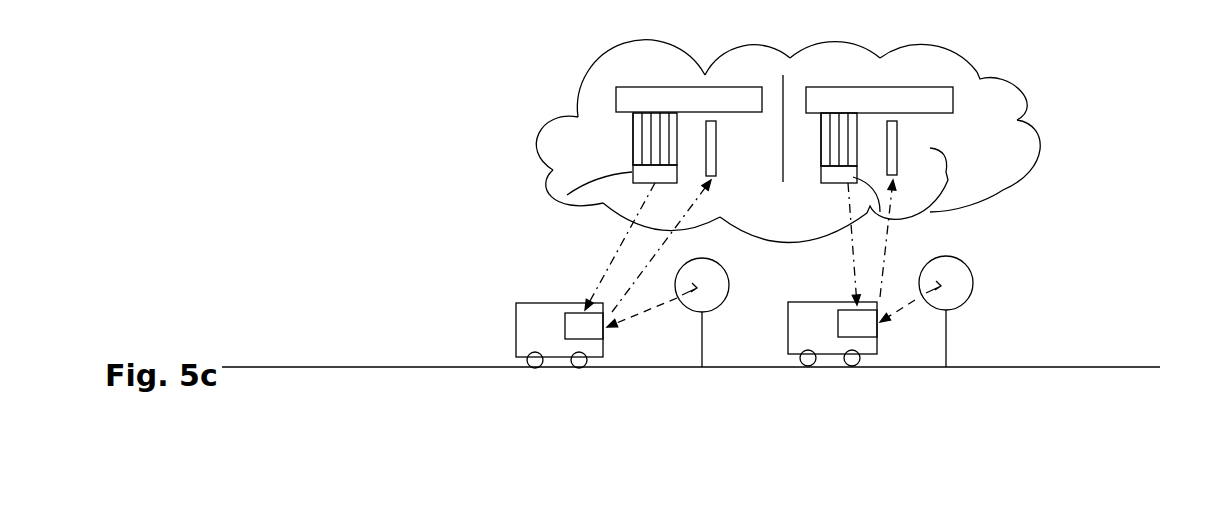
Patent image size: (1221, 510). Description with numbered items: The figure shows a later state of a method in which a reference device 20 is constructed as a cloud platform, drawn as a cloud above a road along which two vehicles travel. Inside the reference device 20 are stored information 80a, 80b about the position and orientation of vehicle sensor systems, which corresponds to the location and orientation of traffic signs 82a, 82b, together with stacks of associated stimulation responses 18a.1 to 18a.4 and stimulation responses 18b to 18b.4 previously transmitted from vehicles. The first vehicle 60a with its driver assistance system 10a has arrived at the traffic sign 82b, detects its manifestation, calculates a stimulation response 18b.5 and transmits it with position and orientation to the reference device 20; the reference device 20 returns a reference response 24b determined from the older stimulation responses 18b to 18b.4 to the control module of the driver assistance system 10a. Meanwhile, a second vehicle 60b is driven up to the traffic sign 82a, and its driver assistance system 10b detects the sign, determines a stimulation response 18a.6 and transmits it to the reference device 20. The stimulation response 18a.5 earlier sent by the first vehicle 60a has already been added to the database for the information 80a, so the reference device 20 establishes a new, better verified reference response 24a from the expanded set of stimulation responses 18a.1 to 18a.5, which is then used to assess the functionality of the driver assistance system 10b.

The reference device 20 is at (458, 112).
The information 80a is at (650, 103).
The information 80b is at (933, 100).
The stimulation response 18a.1 is at (637, 137).
The stimulation response 18a.4 is at (650, 125).
The stimulation response 18a.5 is at (668, 125).
The stimulation response 18a.6 is at (717, 168).
The stimulation response 18b is at (824, 125).
The stimulation response 18b.4 is at (851, 125).
The stimulation response 18b.5 is at (895, 157).
The reference response 24a is at (612, 204).
The reference response 24b is at (867, 213).
The driver assistance system 10a is at (862, 327).
The driver assistance system 10b is at (582, 325).
The first vehicle 60a is at (803, 320).
The second vehicle 60b is at (530, 340).
The traffic sign 82a is at (713, 287).
The traffic sign 82b is at (957, 278).